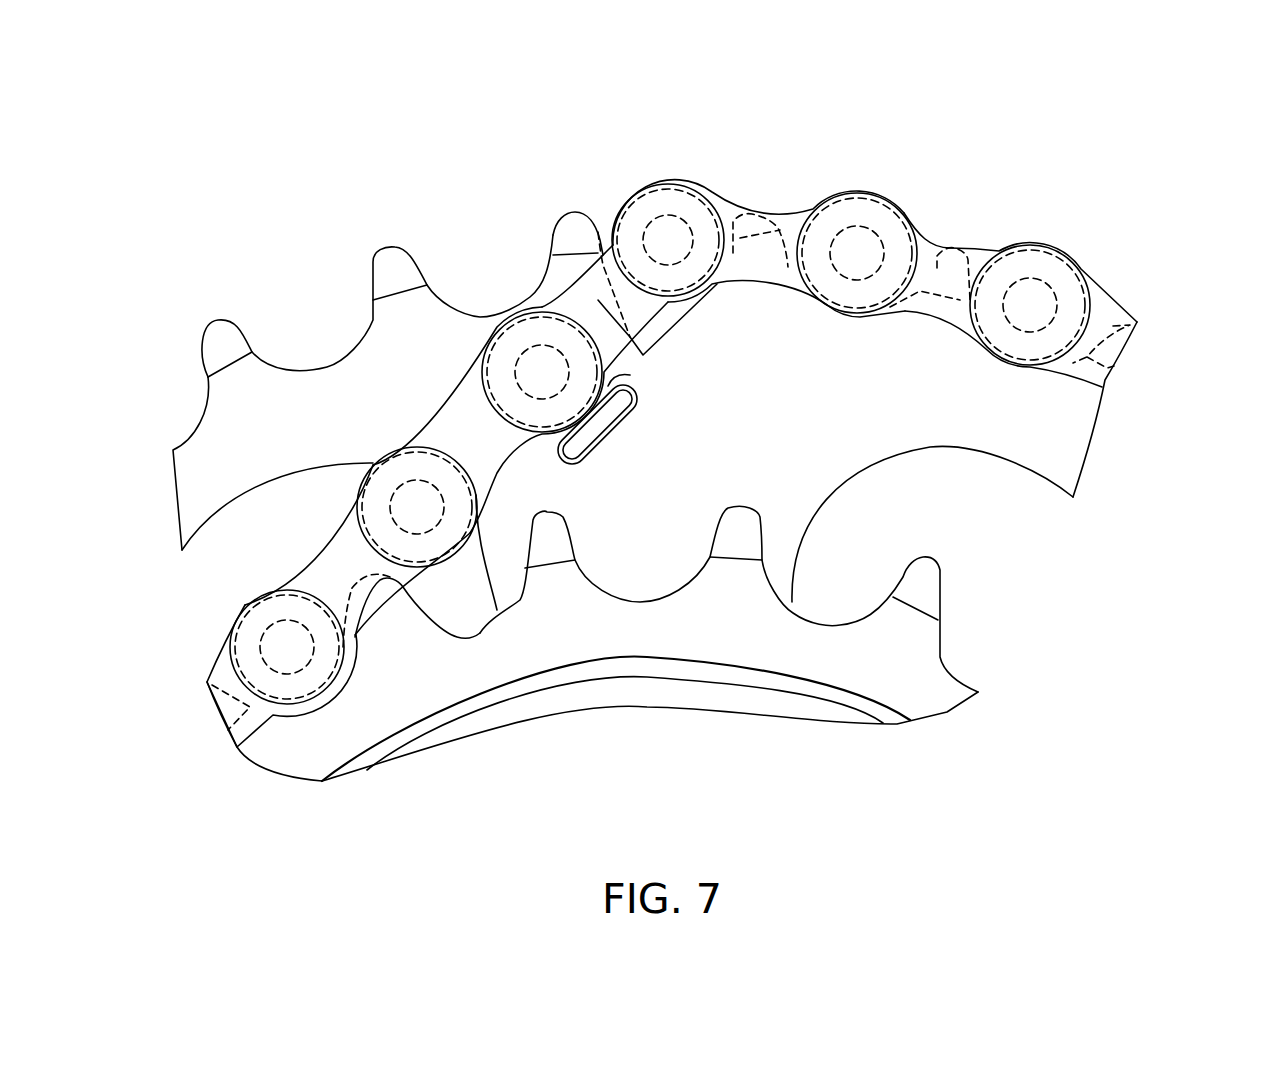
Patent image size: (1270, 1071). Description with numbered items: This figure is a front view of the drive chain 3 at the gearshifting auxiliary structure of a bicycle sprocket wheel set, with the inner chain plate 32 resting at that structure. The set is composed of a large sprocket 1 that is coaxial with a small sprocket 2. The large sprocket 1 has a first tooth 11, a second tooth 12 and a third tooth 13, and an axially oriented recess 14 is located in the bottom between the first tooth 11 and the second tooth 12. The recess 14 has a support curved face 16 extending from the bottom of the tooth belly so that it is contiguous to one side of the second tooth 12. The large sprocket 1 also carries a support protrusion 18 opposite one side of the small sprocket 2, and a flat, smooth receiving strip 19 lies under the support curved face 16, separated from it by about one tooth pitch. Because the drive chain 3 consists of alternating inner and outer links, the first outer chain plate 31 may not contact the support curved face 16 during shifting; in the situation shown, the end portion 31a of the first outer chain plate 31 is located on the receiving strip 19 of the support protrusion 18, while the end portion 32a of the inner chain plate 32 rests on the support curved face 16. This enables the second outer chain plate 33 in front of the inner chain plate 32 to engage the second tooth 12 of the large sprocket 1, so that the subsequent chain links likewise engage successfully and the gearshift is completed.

The large sprocket 1 is at (694, 444).
The small sprocket 2 is at (928, 703).
The drive chain 3 is at (738, 388).
The first tooth 11 is at (567, 222).
The second tooth 12 is at (759, 254).
The third tooth 13 is at (947, 270).
The recess 14 is at (657, 327).
The support curved face 16 is at (724, 273).
The support protrusion 18 is at (610, 425).
The receiving strip 19 is at (630, 375).
The first outer chain plate 31 is at (460, 430).
The end portion 31a is at (570, 408).
The inner chain plate 32 is at (590, 302).
The end portion 32a is at (700, 205).
The second outer chain plate 33 is at (737, 217).